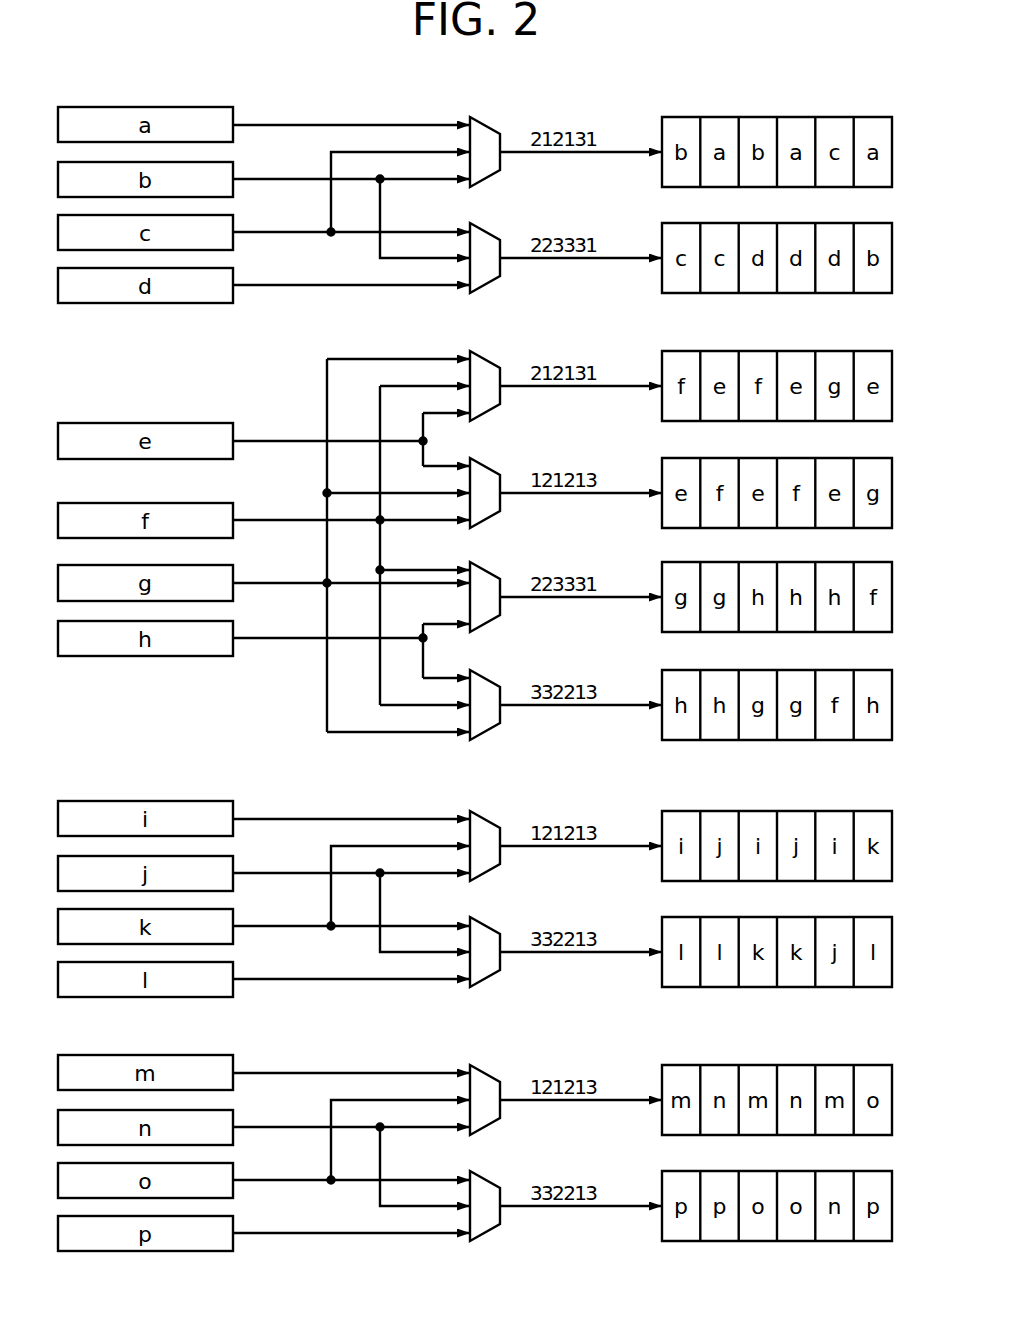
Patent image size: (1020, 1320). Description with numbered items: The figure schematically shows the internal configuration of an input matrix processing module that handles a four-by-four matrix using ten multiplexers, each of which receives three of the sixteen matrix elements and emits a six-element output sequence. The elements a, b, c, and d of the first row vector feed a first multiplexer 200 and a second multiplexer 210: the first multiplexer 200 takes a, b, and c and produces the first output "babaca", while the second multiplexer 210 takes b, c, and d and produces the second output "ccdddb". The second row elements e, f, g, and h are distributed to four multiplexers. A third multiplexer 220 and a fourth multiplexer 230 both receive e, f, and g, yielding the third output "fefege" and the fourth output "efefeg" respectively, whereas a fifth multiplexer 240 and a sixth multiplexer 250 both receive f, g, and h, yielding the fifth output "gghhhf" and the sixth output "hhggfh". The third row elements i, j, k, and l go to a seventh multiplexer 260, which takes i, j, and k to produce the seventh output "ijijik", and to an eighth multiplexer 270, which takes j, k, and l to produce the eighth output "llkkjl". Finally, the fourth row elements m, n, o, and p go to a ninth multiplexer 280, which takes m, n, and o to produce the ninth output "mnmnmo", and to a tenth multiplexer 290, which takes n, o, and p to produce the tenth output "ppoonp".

The first multiplexer 200 is at (492, 122).
The second multiplexer 210 is at (492, 228).
The third multiplexer 220 is at (492, 356).
The fourth multiplexer 230 is at (492, 463).
The fifth multiplexer 240 is at (492, 567).
The sixth multiplexer 250 is at (492, 675).
The seventh multiplexer 260 is at (492, 816).
The eighth multiplexer 270 is at (492, 922).
The ninth multiplexer 280 is at (492, 1070).
The tenth multiplexer 290 is at (492, 1176).